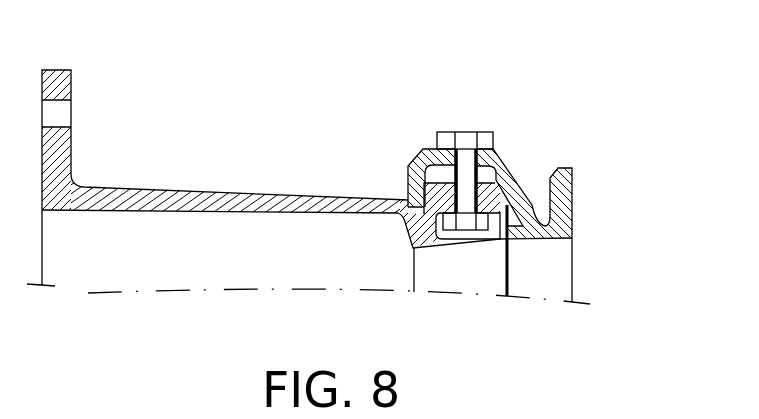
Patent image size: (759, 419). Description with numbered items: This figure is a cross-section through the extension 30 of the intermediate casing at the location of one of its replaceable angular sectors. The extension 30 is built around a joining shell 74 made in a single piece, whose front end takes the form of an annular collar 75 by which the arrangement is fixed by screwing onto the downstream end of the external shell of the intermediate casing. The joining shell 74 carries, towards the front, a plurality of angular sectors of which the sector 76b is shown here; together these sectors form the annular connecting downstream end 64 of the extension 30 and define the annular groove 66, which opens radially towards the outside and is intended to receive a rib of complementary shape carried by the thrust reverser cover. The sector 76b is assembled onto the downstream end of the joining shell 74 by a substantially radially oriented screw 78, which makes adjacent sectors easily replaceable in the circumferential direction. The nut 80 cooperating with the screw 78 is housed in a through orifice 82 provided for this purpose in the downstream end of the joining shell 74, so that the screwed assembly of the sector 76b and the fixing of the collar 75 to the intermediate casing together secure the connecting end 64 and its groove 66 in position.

The extension 30 is at (141, 262).
The annular connecting downstream end 64 is at (537, 161).
The annular groove 66 is at (547, 206).
The joining shell 74 is at (161, 193).
The annular collar 75 is at (72, 82).
The angular sector 76b is at (513, 170).
The screw 78 is at (447, 133).
The nut 80 is at (482, 231).
The through orifice 82 is at (505, 240).